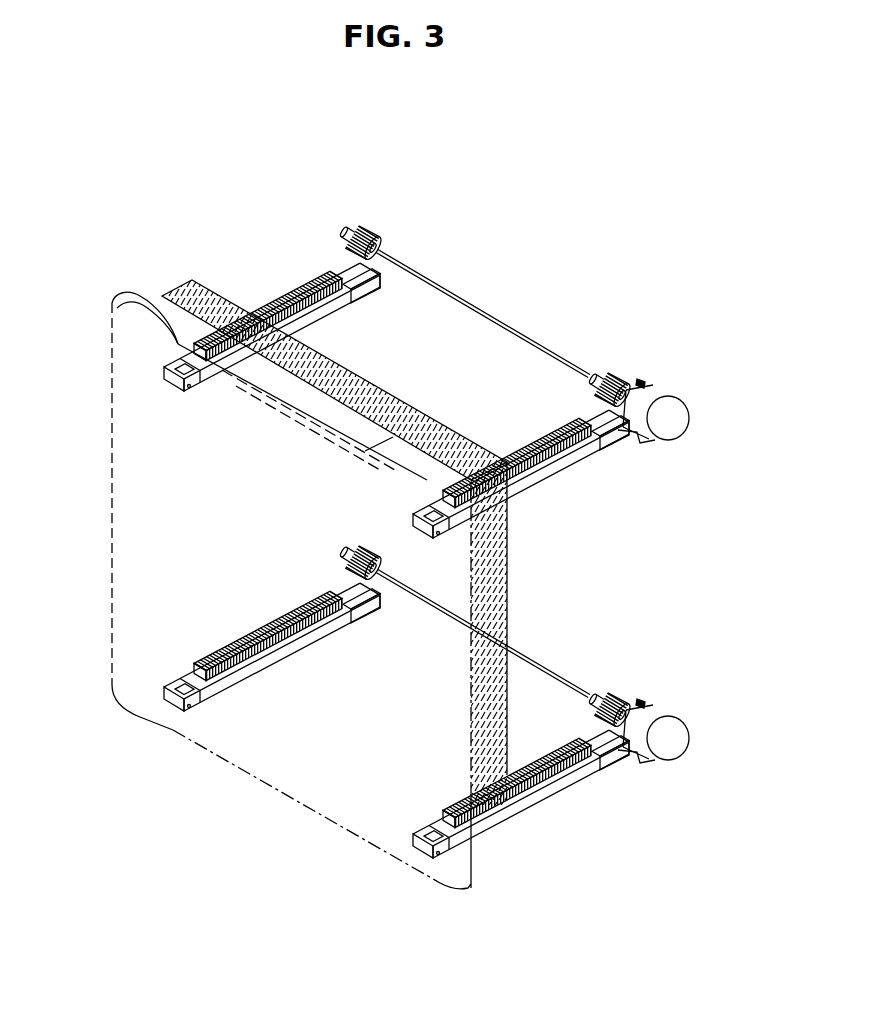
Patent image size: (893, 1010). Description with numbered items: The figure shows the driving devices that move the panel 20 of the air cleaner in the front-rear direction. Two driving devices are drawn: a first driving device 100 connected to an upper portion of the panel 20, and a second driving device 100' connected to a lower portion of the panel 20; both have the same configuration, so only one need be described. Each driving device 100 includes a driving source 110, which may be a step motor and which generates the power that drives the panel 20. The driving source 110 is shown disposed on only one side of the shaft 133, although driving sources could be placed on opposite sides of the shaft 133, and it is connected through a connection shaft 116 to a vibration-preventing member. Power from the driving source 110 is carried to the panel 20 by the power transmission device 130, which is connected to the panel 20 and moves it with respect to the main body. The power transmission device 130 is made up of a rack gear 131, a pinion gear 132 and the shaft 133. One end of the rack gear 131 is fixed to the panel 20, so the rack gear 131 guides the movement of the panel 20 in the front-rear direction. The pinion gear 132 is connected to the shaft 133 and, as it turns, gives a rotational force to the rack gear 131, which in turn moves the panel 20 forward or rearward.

The panel 20 is at (112, 487).
The first driving device 100 is at (577, 406).
The second driving device 100' is at (426, 702).
The driving source 110 is at (676, 410).
The connection shaft 116 is at (625, 386).
The power transmission device 130 is at (274, 261).
The rack gear 131 is at (276, 296).
The pinion gear 132 is at (367, 228).
The shaft 133 is at (328, 210).